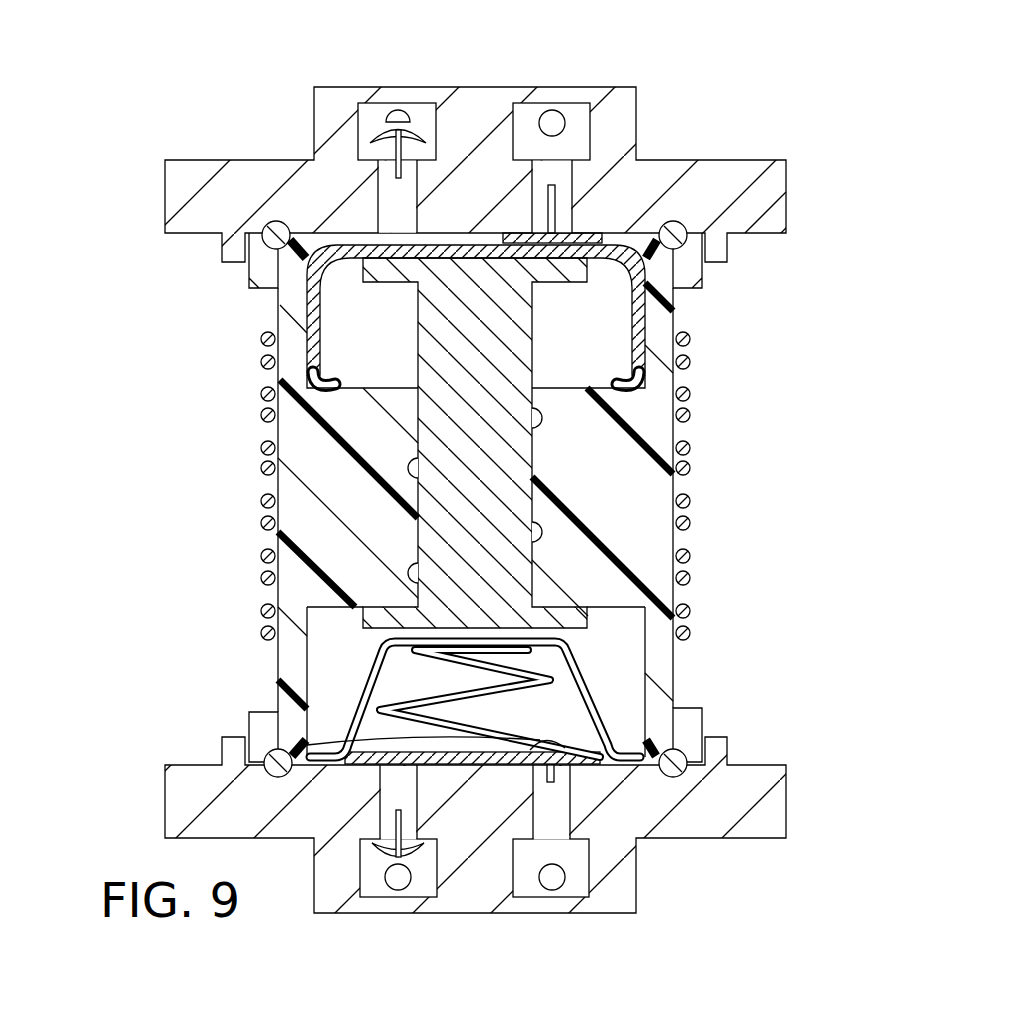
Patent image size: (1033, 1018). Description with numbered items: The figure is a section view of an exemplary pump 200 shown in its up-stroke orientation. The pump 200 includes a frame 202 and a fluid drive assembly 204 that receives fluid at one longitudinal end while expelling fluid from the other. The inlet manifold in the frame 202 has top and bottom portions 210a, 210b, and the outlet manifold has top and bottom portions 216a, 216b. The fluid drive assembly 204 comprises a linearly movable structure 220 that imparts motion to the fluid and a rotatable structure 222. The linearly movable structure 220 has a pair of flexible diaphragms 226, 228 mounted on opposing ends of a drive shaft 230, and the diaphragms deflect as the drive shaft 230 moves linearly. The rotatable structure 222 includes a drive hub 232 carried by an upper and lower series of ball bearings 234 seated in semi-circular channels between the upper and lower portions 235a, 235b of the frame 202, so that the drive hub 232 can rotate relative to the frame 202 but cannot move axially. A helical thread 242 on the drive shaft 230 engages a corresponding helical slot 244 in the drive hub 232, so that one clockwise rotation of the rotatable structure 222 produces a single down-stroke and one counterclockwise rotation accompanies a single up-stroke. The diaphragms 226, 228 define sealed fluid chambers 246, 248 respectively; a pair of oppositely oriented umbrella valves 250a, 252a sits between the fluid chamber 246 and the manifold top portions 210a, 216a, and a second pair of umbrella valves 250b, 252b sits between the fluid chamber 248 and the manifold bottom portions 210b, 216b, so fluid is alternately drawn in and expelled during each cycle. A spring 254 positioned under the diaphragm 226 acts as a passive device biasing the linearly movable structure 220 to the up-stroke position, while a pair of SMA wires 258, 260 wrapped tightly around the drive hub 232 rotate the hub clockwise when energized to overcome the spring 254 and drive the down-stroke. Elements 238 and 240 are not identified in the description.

The pump 200 is at (740, 50).
The frame 202 is at (725, 162).
The fluid drive assembly 204 is at (122, 481).
The inlet manifold top portion 210a is at (553, 107).
The inlet manifold bottom portion 210b is at (552, 897).
The outlet manifold top portion 216a is at (397, 106).
The outlet manifold bottom portion 216b is at (398, 895).
The linearly movable structure 220 is at (589, 462).
The rotatable structure 222 is at (262, 308).
The diaphragm 226 is at (600, 705).
The diaphragm 228 is at (612, 362).
The drive shaft 230 is at (532, 585).
The drive hub 232 is at (277, 658).
The bearings 234 is at (700, 738).
The frame upper portion 235a is at (787, 197).
The frame lower portion 235b is at (787, 772).
The lower left bracket 238 is at (263, 710).
The upper right bracket 240 is at (688, 288).
The helical thread 242 is at (550, 415).
The helical slot 244 is at (545, 525).
The fluid chamber 246 is at (318, 232).
The fluid chamber 248 is at (562, 696).
The umbrella valve 250a is at (583, 237).
The umbrella valve 250b is at (553, 780).
The umbrella valve 252a is at (377, 132).
The umbrella valve 252b is at (425, 850).
The spring 254 is at (325, 742).
The SMA wire 258 is at (262, 448).
The SMA wire 260 is at (261, 468).